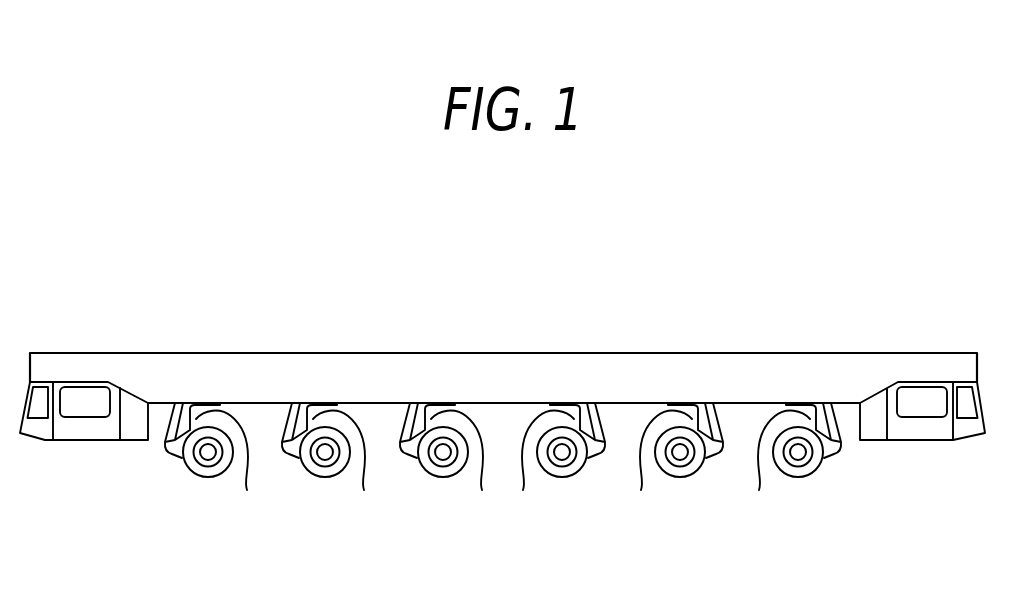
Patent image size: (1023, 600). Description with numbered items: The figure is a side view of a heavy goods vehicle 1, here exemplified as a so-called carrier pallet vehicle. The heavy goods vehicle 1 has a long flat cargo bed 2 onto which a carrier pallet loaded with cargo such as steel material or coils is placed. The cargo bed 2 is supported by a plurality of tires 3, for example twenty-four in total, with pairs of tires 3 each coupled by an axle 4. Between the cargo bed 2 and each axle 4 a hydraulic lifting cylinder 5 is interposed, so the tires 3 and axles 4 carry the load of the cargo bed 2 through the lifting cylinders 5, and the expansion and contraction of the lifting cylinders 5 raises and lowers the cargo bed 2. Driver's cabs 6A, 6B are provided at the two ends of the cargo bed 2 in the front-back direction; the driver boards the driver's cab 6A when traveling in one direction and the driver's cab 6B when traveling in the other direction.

The heavy goods vehicle 1 is at (706, 245).
The cargo bed 2 is at (487, 353).
The tire 3 is at (503, 481).
The axle 4 is at (503, 487).
The hydraulic lifting cylinder 5 is at (503, 473).
The driver's cab 6A is at (88, 441).
The driver's cab 6B is at (918, 441).